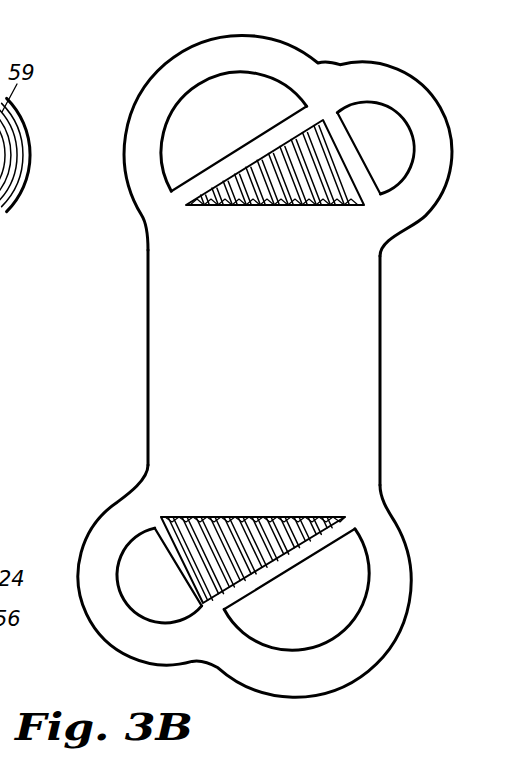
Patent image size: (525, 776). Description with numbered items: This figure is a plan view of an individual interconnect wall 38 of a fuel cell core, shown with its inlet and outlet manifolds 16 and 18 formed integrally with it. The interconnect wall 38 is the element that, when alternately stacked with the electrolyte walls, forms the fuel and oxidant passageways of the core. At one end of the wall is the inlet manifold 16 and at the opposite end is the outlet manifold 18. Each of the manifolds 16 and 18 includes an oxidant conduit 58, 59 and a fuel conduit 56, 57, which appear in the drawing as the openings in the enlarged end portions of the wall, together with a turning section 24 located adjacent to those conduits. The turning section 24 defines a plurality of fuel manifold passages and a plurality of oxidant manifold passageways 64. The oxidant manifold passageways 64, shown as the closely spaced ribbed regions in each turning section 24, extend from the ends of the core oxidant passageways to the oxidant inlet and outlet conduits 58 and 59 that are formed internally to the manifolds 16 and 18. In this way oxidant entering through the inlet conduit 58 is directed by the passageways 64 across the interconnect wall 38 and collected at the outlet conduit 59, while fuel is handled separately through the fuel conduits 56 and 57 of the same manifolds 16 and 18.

The inlet manifold 16 is at (195, 676).
The outlet manifold 18 is at (328, 52).
The turning section 24 is at (366, 173).
The interconnect wall 38 is at (392, 322).
The fuel conduit 56 is at (367, 590).
The fuel conduit 57 is at (242, 60).
The oxidant conduit 58 is at (108, 540).
The oxidant conduit 59 is at (376, 86).
The oxidant manifold passageways 64 is at (288, 208).